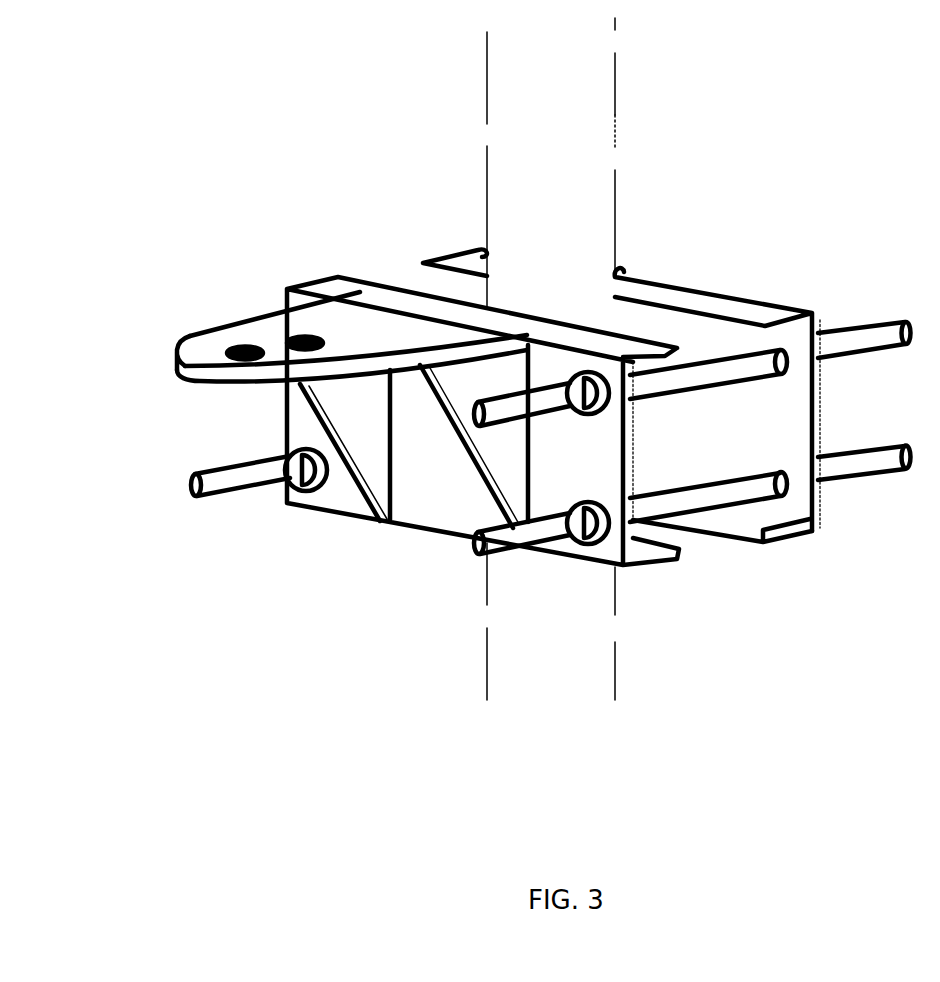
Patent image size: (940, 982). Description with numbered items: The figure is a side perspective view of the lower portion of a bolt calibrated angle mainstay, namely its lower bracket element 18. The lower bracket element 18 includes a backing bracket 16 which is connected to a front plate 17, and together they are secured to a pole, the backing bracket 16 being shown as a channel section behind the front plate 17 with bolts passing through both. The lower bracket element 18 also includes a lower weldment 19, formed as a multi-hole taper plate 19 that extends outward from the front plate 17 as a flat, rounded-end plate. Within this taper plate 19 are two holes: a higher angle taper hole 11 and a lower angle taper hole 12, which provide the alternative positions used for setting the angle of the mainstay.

The higher angle taper hole 11 is at (287, 337).
The lower angle taper hole 12 is at (223, 368).
The backing bracket 16 is at (740, 300).
The front plate 17 is at (597, 448).
The lower bracket element 18 is at (349, 128).
The lower weldment 19 is at (187, 338).